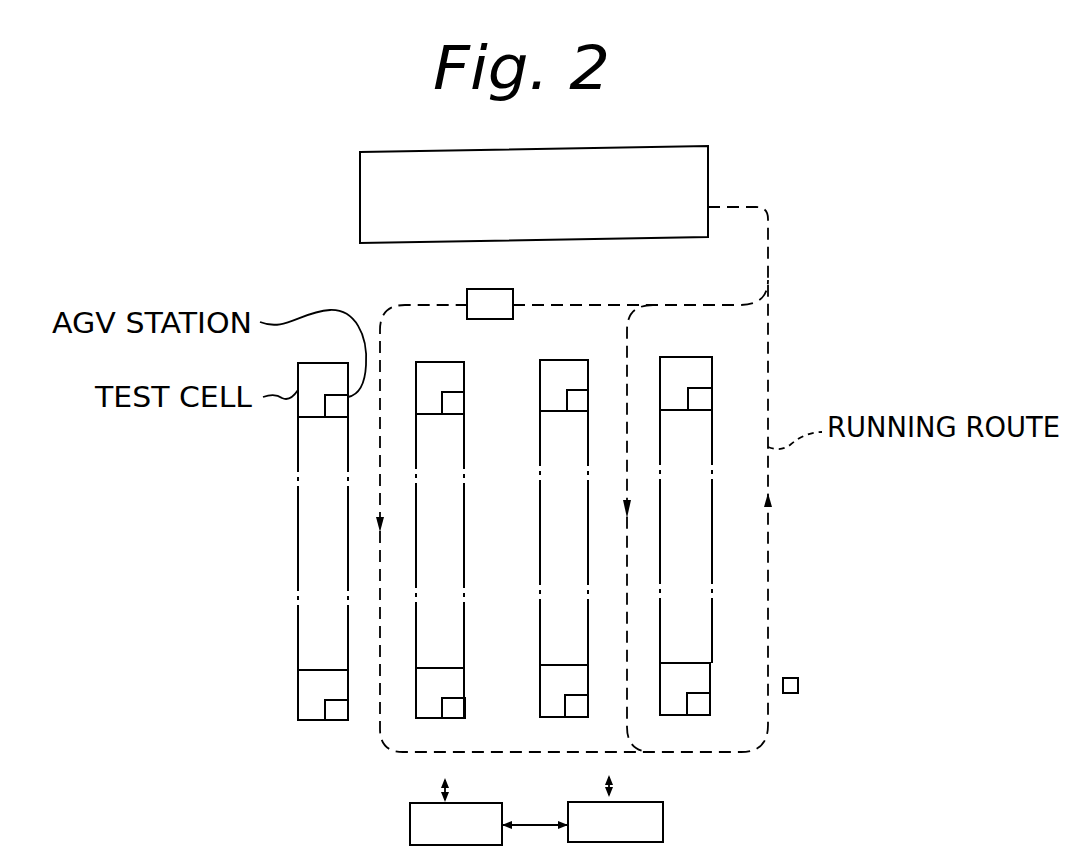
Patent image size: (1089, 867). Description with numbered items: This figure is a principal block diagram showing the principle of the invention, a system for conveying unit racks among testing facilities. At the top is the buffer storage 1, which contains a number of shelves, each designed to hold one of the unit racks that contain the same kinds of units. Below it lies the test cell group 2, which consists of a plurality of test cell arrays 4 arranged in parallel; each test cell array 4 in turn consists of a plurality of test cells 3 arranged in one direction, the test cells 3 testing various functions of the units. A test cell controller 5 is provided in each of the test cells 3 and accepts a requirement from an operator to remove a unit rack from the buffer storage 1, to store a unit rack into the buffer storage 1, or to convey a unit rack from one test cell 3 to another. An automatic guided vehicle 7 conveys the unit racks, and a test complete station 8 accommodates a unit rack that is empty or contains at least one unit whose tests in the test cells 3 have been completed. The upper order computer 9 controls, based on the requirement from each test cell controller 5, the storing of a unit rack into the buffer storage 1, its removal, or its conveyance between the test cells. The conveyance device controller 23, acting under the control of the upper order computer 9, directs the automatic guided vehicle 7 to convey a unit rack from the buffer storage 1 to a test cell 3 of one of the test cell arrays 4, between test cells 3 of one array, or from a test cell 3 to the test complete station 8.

The buffer storage 1 is at (604, 146).
The test cell group 2 is at (275, 558).
The test cell 3 is at (330, 363).
The test cell array 4 is at (298, 647).
The test cell controller 5 is at (342, 405).
The automatic guided vehicle 7 is at (515, 296).
The test complete station 8 is at (798, 685).
The upper order computer 9 is at (663, 811).
The conveyance device controller 23 is at (410, 835).